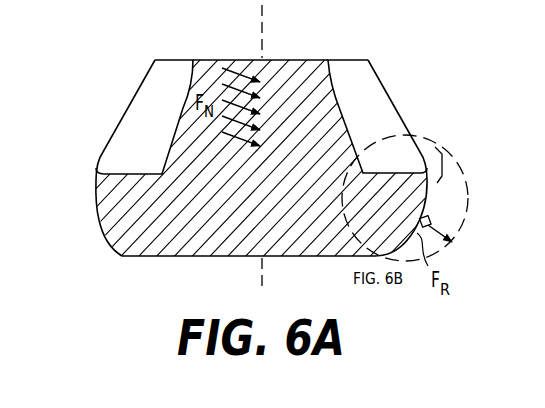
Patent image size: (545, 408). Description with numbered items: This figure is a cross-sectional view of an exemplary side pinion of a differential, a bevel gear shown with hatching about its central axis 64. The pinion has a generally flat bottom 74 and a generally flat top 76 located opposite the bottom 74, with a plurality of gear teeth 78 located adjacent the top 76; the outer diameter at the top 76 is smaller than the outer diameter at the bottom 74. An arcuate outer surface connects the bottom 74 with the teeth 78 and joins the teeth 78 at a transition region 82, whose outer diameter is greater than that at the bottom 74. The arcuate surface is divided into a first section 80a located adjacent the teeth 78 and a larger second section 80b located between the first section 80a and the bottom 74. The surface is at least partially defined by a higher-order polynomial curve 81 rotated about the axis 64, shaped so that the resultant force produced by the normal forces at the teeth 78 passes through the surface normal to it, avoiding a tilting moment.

The axis 64 is at (262, 58).
The bottom 74 is at (142, 258).
The top 76 is at (318, 61).
The gear teeth 78 is at (145, 114).
The first section 80a is at (97, 182).
The second section 80b is at (110, 243).
The curve 81 is at (429, 212).
The transition region 82 is at (442, 162).